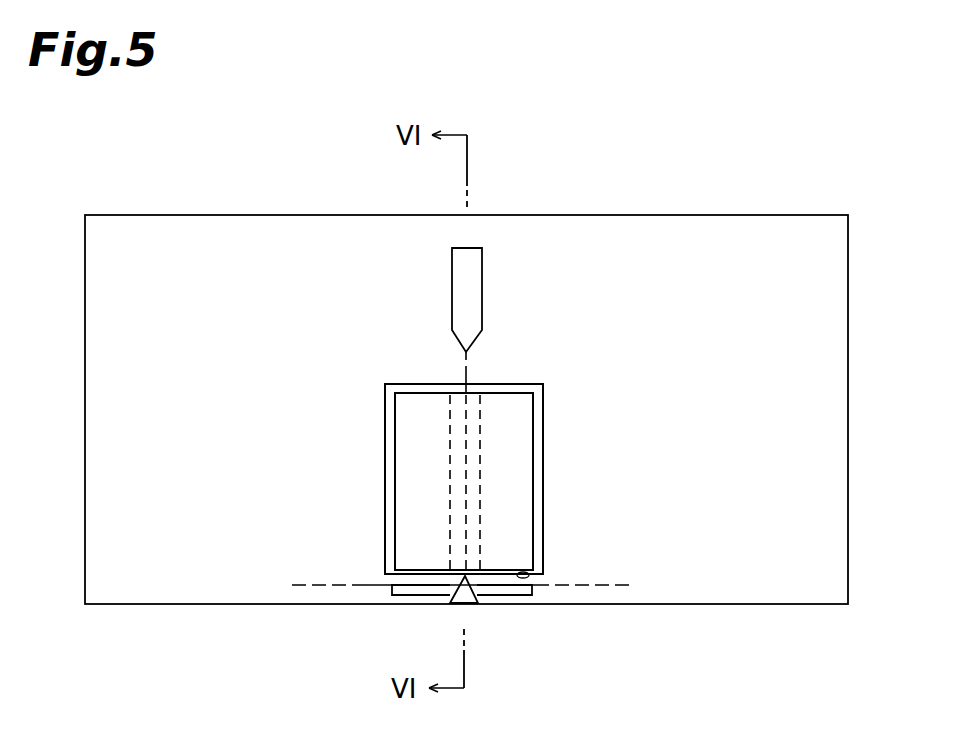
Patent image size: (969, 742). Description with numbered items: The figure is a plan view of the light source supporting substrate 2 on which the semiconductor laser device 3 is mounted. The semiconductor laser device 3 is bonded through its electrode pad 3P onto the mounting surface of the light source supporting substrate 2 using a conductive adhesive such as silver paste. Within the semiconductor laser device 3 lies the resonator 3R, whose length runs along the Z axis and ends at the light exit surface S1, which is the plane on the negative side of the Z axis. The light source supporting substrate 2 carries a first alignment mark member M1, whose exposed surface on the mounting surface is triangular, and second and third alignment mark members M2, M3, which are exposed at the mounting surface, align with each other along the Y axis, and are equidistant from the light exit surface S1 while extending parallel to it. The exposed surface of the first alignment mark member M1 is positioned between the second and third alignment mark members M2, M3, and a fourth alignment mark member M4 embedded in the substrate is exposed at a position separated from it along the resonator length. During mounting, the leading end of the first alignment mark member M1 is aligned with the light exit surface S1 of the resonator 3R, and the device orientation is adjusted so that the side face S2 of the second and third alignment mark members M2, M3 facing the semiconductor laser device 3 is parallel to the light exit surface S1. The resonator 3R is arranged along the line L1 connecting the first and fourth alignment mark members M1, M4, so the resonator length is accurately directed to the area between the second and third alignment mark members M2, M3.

The light source supporting substrate 2 is at (830, 405).
The semiconductor laser device 3 is at (527, 468).
The electrode pad 3P is at (538, 424).
The resonator 3R is at (470, 510).
The line L1 is at (467, 372).
The first alignment mark member M1 is at (467, 600).
The second alignment mark member M2 is at (408, 596).
The third alignment mark member M3 is at (517, 596).
The fourth alignment mark member M4 is at (482, 290).
The light exit surface S1 is at (540, 572).
The side face S2 is at (483, 587).